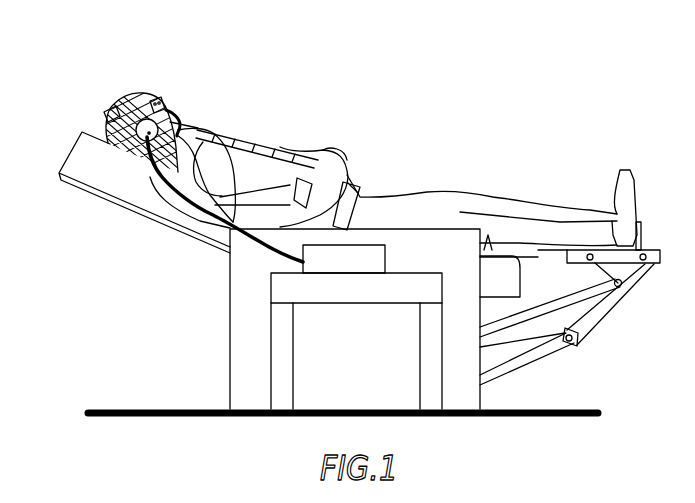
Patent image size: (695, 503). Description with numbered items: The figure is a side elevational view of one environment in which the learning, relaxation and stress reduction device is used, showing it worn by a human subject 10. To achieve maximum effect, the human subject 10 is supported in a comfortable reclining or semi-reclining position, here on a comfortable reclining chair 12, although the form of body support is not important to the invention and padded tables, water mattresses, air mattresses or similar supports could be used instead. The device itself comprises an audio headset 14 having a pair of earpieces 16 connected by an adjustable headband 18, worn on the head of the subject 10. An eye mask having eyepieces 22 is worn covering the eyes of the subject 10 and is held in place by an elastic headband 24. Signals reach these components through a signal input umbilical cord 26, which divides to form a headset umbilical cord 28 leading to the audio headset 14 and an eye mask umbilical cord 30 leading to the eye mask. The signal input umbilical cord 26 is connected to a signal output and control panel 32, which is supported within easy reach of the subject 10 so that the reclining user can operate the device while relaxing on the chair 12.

The human subject 10 is at (301, 156).
The reclining chair 12 is at (247, 305).
The audio headset 14 is at (127, 97).
The earpieces 16 is at (101, 158).
The adjustable headband 18 is at (110, 117).
The eyepieces 22 is at (157, 97).
The elastic headband 24 is at (167, 110).
The signal input umbilical cord 26 is at (262, 252).
The headset umbilical cord 28 is at (178, 200).
The eye mask umbilical cord 30 is at (247, 140).
The signal output and control panel 32 is at (345, 263).